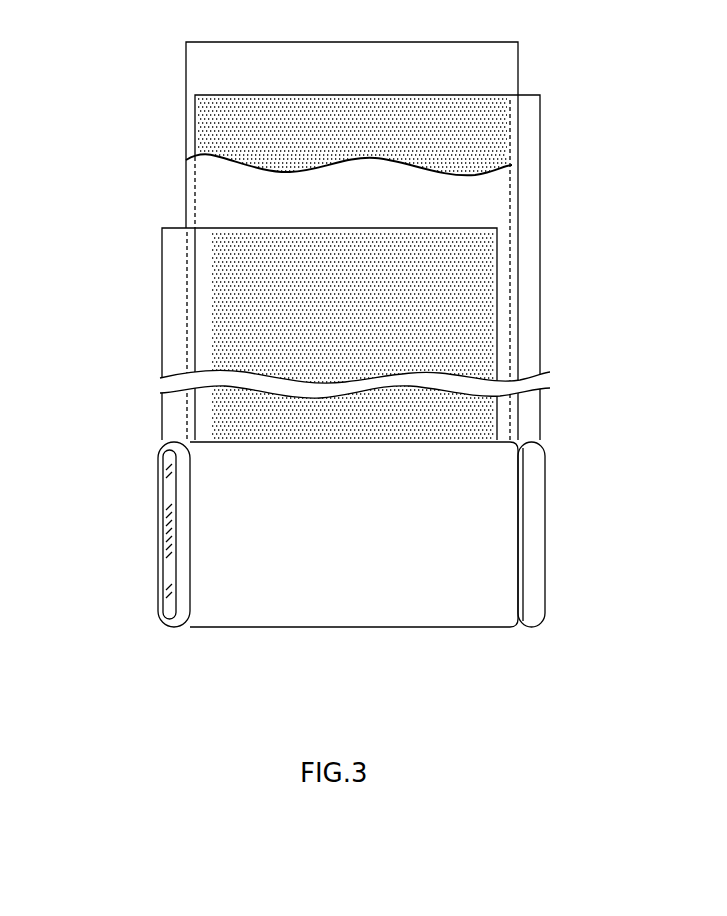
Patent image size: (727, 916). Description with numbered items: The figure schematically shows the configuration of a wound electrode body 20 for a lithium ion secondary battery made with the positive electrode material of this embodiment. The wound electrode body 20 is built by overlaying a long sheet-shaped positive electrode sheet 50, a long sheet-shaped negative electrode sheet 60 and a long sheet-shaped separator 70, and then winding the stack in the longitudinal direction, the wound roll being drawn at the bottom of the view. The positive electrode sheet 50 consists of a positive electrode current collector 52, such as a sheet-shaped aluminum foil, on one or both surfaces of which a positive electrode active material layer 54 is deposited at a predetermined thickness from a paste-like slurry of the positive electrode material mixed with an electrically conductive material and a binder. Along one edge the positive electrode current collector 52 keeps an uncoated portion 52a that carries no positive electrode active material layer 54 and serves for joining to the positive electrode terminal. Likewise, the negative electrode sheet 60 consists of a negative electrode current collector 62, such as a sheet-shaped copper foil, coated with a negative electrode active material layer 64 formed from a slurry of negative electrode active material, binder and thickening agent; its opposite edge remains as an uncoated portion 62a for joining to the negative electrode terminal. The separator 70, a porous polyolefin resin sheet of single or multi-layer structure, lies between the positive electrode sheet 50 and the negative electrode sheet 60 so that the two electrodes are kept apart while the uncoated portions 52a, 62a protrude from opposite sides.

The wound electrode body 20 is at (413, 607).
The positive electrode sheet 50 is at (264, 382).
The positive electrode current collector 52 is at (264, 382).
The uncoated portion 52a is at (182, 524).
The positive electrode active material layer 54 is at (220, 246).
The negative electrode sheet 60 is at (421, 265).
The negative electrode current collector 62 is at (425, 267).
The uncoated portion 62a is at (527, 244).
The negative electrode active material layer 64 is at (505, 119).
The separator 70 is at (208, 62).